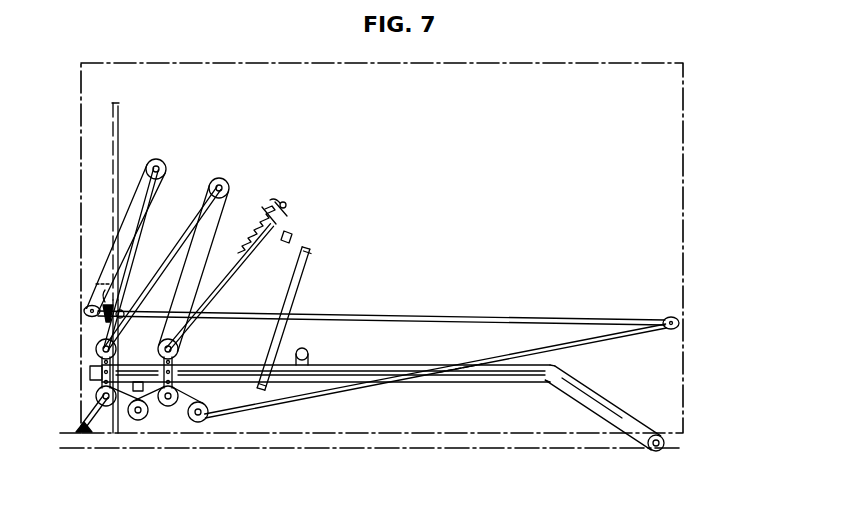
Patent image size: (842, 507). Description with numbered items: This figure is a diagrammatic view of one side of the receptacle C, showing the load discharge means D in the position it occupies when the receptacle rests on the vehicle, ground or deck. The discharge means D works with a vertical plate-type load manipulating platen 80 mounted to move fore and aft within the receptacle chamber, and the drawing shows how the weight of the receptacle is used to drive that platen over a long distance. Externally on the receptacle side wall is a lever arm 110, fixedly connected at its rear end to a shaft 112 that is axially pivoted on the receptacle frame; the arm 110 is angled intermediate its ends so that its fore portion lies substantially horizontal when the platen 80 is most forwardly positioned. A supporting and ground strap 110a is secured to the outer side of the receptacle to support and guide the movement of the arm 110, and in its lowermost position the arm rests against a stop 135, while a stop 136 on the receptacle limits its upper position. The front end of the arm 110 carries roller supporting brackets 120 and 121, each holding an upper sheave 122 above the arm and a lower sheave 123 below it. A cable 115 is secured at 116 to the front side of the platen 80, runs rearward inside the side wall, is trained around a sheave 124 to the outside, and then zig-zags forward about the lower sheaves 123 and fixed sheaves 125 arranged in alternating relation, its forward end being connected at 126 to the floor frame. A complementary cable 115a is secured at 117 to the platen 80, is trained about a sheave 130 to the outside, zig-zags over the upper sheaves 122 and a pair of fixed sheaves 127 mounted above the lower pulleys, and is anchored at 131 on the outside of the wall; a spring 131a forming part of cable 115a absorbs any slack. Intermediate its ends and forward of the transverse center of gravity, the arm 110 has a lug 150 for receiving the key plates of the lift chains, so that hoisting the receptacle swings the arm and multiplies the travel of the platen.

The receptacle C is at (686, 206).
The load discharge means D is at (352, 367).
The load manipulating platen 80 is at (122, 114).
The lever arm 110 is at (487, 383).
The supporting and ground strap 110a is at (296, 292).
The shaft 112 is at (653, 452).
The cable 115 is at (362, 316).
The complementary cable 115a is at (268, 218).
The cable connection 116 is at (126, 295).
The complementary cable connection 117 is at (107, 286).
The roller supporting bracket 120 is at (116, 354).
The roller supporting bracket 121 is at (180, 357).
The upper sheave 122 is at (94, 350).
The lower sheave 123 is at (112, 410).
The sheave 124 is at (669, 316).
The sheave 125 is at (138, 420).
The cable connection 126 is at (62, 428).
The sheave 127 is at (219, 182).
The sheave 130 is at (84, 314).
The cable connection 131 is at (288, 210).
The spring 131a is at (276, 206).
The stop 135 is at (157, 398).
The stop 136 is at (293, 233).
The lug 150 is at (306, 350).